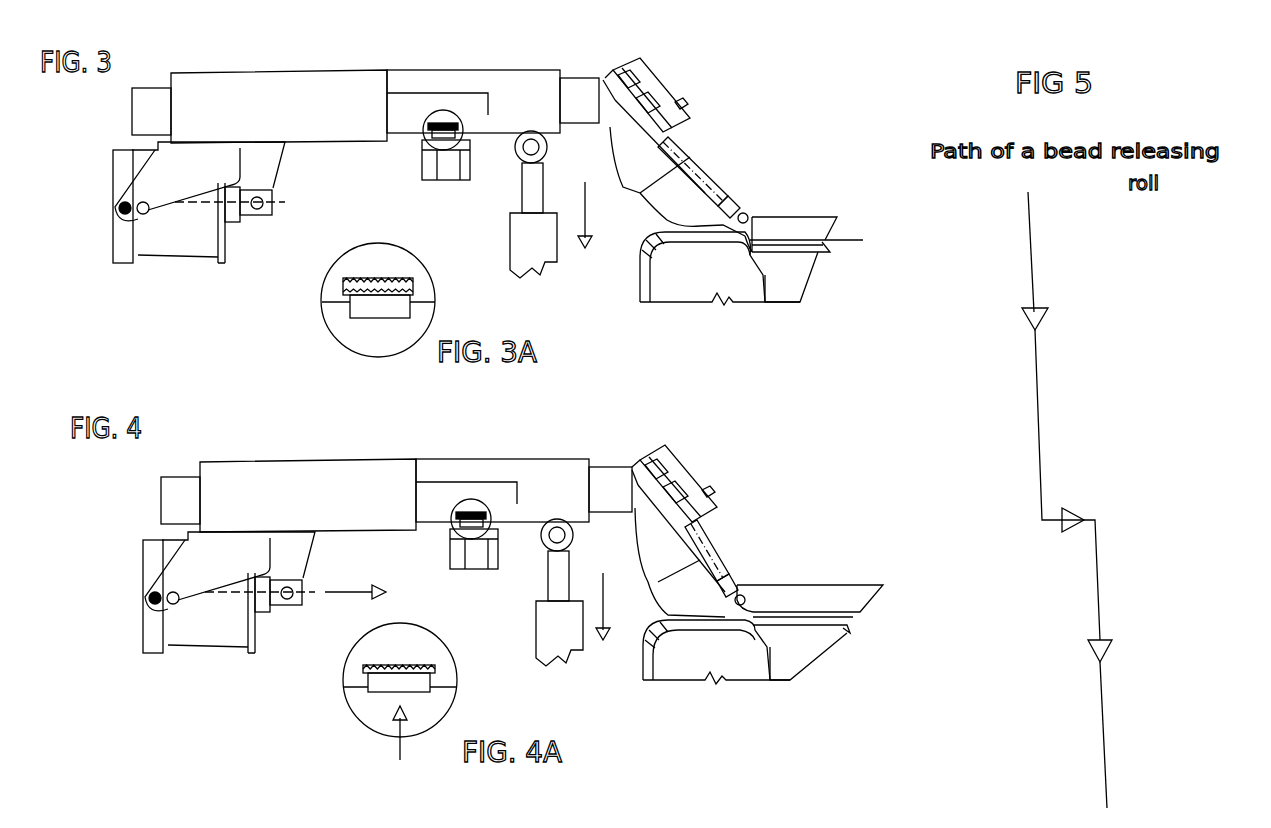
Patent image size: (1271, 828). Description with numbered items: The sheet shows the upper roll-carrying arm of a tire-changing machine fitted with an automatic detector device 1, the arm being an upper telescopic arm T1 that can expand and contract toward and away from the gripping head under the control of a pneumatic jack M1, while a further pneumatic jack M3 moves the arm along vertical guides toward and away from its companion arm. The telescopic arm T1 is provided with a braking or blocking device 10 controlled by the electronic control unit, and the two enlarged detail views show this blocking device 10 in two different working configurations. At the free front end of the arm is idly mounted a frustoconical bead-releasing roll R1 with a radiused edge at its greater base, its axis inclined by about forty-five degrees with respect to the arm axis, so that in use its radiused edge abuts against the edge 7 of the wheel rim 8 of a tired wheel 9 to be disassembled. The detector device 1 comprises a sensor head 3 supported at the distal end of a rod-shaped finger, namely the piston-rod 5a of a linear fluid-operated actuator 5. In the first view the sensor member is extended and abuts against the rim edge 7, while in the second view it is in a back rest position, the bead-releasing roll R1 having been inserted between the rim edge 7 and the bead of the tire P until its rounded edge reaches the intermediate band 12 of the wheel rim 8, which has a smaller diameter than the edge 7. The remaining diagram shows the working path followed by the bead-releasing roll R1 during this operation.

In FIG. 3, the automatic detector device 1 is at (668, 76).
In FIG. 4, the automatic detector device 1 is at (697, 462).
In FIG. 3, the sensor head 3 is at (745, 212).
In FIG. 4, the sensor head 3 is at (737, 562).
In FIG. 3, the linear fluid-operated actuator 5 is at (613, 74).
In FIG. 4, the linear fluid-operated actuator 5 is at (678, 531).
In FIG. 3, the piston-rod 5a is at (700, 165).
In FIG. 4, the piston-rod 5a is at (707, 550).
In FIG. 3, the edge of the wheel rim 7 is at (760, 215).
In FIG. 4, the edge of the wheel rim 7 is at (750, 590).
In FIG. 3, the wheel rim 8 is at (802, 275).
In FIG. 4, the wheel rim 8 is at (807, 650).
In FIG. 3, the tired wheel 9 is at (766, 305).
In FIG. 4, the tired wheel 9 is at (765, 692).
In FIG. 3, the braking or blocking device 10 is at (438, 180).
In FIG. 3A, the braking or blocking device 10 is at (360, 308).
In FIG. 4, the braking or blocking device 10 is at (468, 570).
In FIG. 4A, the braking or blocking device 10 is at (378, 683).
In FIG. 3, the intermediate band of the wheel rim 12 is at (863, 240).
In FIG. 4, the intermediate band of the wheel rim 12 is at (860, 612).
In FIG. 3, the pneumatic jack M1 is at (150, 227).
In FIG. 4, the pneumatic jack M1 is at (178, 626).
In FIG. 3, the pneumatic jack M3 is at (548, 264).
In FIG. 4, the pneumatic jack M3 is at (555, 655).
In FIG. 3, the bead-releasing roll R1 is at (640, 195).
In FIG. 4, the bead-releasing roll R1 is at (662, 578).
In FIG. 3, the tire P is at (700, 288).
In FIG. 4, the tire P is at (700, 683).
In FIG. 3, the upper telescopic arm T1 is at (501, 90).
In FIG. 4, the upper telescopic arm T1 is at (518, 475).